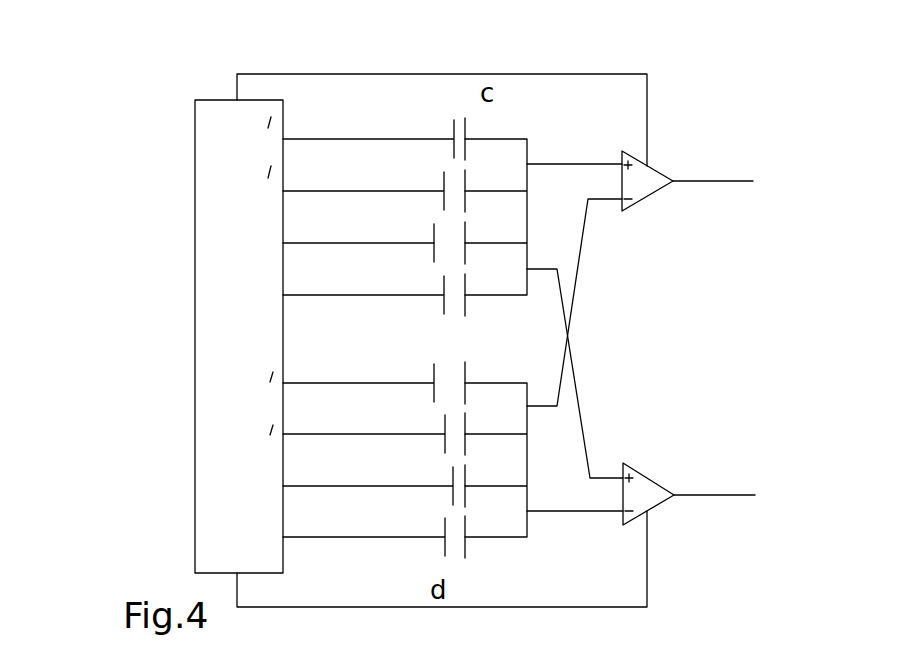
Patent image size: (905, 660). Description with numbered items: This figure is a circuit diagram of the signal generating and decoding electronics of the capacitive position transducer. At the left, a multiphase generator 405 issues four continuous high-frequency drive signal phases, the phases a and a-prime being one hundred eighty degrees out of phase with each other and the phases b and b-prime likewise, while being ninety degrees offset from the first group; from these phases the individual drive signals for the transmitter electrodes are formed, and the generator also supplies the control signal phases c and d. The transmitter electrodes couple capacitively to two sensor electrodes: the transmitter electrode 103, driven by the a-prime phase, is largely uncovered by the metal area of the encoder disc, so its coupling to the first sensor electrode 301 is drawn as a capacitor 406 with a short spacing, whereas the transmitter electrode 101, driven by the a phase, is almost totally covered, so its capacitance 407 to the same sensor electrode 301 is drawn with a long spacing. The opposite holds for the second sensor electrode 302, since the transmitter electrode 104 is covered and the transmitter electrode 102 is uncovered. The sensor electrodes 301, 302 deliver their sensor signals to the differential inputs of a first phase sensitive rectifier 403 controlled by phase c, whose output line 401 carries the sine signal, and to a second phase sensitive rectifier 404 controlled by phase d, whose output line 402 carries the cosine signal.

The multiphase generator 405 is at (208, 107).
The capacitor 406 is at (462, 120).
The capacitance 407 is at (433, 226).
The transmitter electrode 103 is at (335, 145).
The transmitter electrode 101 is at (330, 247).
The transmitter electrode 104 is at (350, 384).
The transmitter electrode 102 is at (350, 487).
The first sensor electrode 301 is at (503, 297).
The second sensor electrode 302 is at (505, 538).
The output line 401 is at (756, 181).
The output line 402 is at (755, 495).
The first phase sensitive rectifier 403 is at (646, 202).
The second phase sensitive rectifier 404 is at (653, 510).